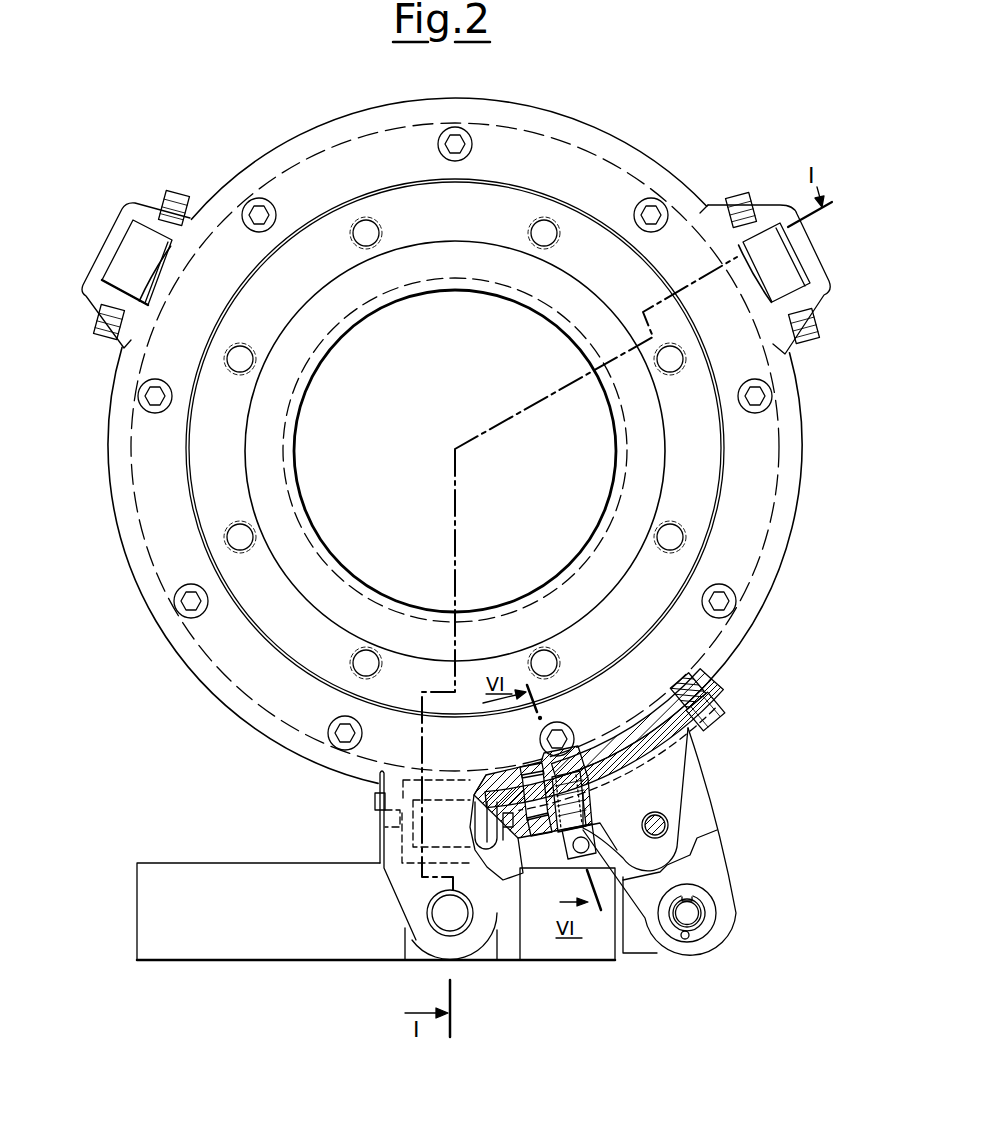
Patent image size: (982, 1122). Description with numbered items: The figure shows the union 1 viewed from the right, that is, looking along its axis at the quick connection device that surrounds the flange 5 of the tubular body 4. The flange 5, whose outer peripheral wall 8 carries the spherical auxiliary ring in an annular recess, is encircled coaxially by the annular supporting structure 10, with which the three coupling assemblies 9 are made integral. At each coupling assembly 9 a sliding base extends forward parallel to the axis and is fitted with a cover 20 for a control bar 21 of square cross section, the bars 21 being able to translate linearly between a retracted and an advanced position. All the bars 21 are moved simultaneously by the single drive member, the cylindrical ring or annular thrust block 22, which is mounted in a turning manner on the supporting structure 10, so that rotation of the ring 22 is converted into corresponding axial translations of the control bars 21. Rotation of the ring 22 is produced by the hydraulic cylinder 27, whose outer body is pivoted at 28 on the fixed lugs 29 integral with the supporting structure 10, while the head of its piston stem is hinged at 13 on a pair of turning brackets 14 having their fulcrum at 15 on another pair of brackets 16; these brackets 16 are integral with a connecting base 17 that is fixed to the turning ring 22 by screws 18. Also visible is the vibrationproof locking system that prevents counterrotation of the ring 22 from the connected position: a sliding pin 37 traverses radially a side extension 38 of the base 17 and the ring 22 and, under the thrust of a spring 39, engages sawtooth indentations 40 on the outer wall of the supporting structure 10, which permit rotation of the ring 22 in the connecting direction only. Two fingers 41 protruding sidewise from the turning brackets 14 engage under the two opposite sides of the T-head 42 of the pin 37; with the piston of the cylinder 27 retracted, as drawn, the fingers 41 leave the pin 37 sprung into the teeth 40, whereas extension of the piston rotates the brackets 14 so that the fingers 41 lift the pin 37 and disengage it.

The union 1 is at (316, 522).
The tubular body 4 is at (350, 606).
The flange 5 is at (322, 275).
The outer peripheral wall 8 is at (256, 293).
The coupling assemblies 9 is at (109, 218).
The annular supporting structure 10 is at (523, 777).
The hinge of piston stem head 13 is at (692, 917).
The turning brackets 14 is at (710, 864).
The fulcrum 15 is at (669, 818).
The brackets 16 is at (670, 783).
The connecting base 17 is at (664, 752).
The screws 18 is at (718, 715).
The covers 20 is at (817, 273).
The control bars 21 is at (155, 226).
The ring or annular thrust block 22 is at (655, 712).
The hydraulic cylinder 27 is at (218, 948).
The pivot of cylinder body 28 is at (448, 923).
The fixed lugs 29 is at (397, 882).
The sliding pin 37 is at (572, 838).
The side extension 38 is at (495, 797).
The spring 39 is at (531, 846).
The sawtooth indentations 40 is at (562, 748).
The fingers 41 is at (604, 844).
The T-head 42 is at (592, 874).